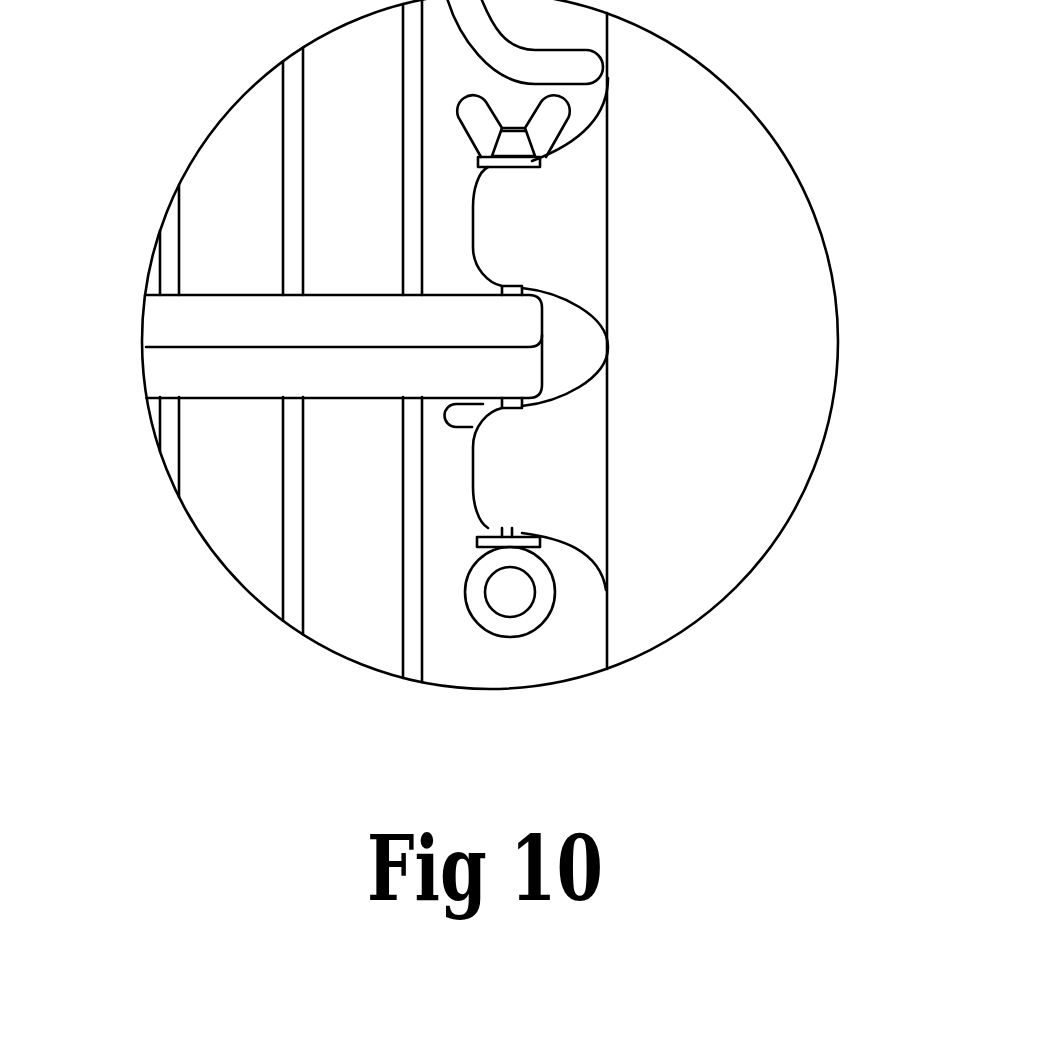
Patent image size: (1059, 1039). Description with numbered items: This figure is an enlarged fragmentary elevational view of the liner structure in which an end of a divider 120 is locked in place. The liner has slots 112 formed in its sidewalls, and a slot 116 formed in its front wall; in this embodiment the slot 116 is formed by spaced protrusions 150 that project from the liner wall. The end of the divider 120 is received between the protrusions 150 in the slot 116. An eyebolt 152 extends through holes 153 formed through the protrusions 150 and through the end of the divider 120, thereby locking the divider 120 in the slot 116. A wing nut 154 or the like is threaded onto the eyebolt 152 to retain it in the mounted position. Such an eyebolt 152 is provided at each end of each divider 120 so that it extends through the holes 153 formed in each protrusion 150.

The slot 112 is at (735, 353).
The slot 116 is at (577, 302).
The divider 120 is at (167, 372).
The protrusion 150 is at (573, 175).
The eyebolt 152 is at (512, 623).
The hole 153 is at (522, 288).
The wing nut 154 is at (547, 127).